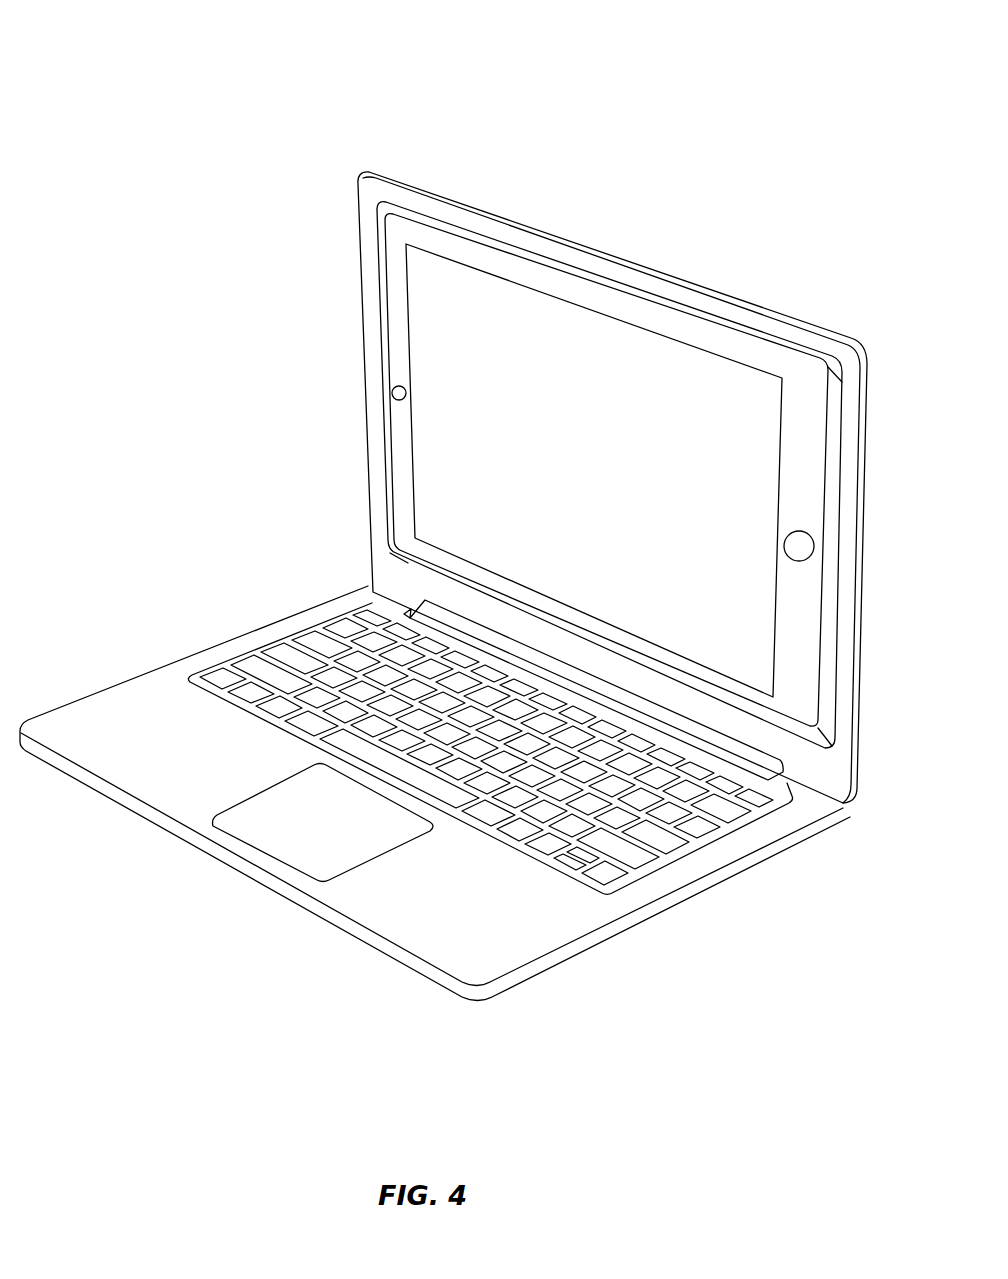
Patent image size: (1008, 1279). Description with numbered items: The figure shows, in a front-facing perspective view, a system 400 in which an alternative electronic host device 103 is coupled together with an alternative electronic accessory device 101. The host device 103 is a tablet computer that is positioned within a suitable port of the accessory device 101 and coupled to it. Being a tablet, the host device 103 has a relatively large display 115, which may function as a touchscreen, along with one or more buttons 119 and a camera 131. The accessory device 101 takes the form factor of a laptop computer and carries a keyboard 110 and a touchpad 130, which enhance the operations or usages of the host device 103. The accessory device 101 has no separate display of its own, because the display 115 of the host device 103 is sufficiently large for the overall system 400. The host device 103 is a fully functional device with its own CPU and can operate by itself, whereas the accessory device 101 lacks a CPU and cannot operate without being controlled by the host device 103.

The system 400 is at (203, 72).
The electronic accessory device 101 is at (358, 232).
The electronic host device 103 is at (805, 352).
The keyboard 110 is at (693, 853).
The display 115 is at (601, 471).
The button 119 is at (815, 548).
The touchpad 130 is at (257, 843).
The camera 131 is at (392, 393).